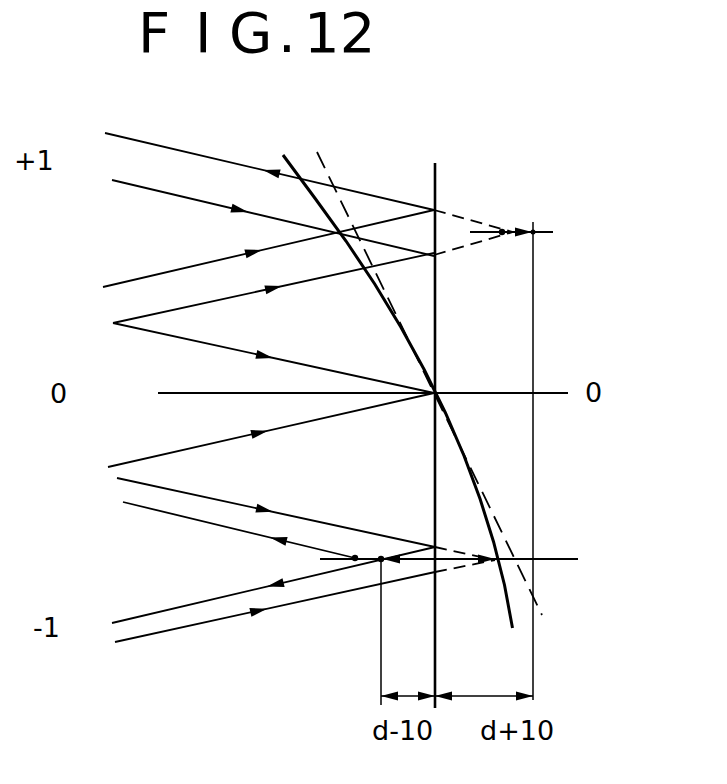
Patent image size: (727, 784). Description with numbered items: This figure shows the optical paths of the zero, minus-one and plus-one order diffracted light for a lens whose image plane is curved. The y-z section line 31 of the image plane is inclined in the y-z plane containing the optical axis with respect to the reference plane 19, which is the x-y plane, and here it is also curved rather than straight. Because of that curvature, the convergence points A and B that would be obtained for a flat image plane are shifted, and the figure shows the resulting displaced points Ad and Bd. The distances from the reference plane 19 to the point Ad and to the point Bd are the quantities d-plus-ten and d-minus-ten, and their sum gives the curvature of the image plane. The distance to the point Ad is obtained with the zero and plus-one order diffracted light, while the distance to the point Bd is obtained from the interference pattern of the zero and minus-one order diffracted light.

The reference plane 19 is at (437, 177).
The y-z section line of the image plane 31 is at (290, 163).
The point A is at (502, 232).
The point Ad is at (537, 227).
The point B is at (355, 558).
The point Bd is at (381, 558).